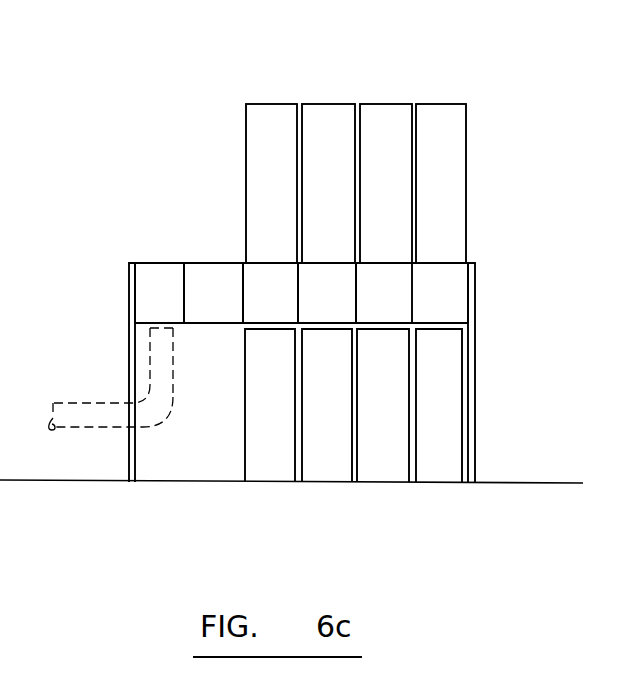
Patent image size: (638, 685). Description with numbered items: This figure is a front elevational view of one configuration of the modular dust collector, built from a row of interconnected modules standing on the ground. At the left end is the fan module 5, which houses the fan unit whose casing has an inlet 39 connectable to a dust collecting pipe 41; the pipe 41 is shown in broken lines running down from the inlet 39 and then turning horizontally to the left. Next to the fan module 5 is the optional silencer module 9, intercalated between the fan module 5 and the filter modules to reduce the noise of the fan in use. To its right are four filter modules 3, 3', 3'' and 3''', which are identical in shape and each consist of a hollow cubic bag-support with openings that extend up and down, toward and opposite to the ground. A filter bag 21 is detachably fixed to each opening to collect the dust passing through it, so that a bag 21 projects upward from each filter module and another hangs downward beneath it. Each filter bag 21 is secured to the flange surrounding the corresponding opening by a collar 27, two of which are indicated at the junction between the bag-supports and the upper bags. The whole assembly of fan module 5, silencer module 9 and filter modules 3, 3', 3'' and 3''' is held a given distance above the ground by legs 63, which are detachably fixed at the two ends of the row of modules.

The filter bag 21 is at (320, 115).
The collar 27 is at (451, 344).
The legs 63 is at (128, 351).
The inlet 39 is at (170, 328).
The dust collecting pipe 41 is at (158, 399).
The fan module 5 is at (166, 304).
The silencer module 9 is at (217, 304).
The filter module 3 is at (270, 372).
The filter module 3' is at (327, 372).
The filter module 3'' is at (383, 378).
The filter module 3''' is at (439, 378).